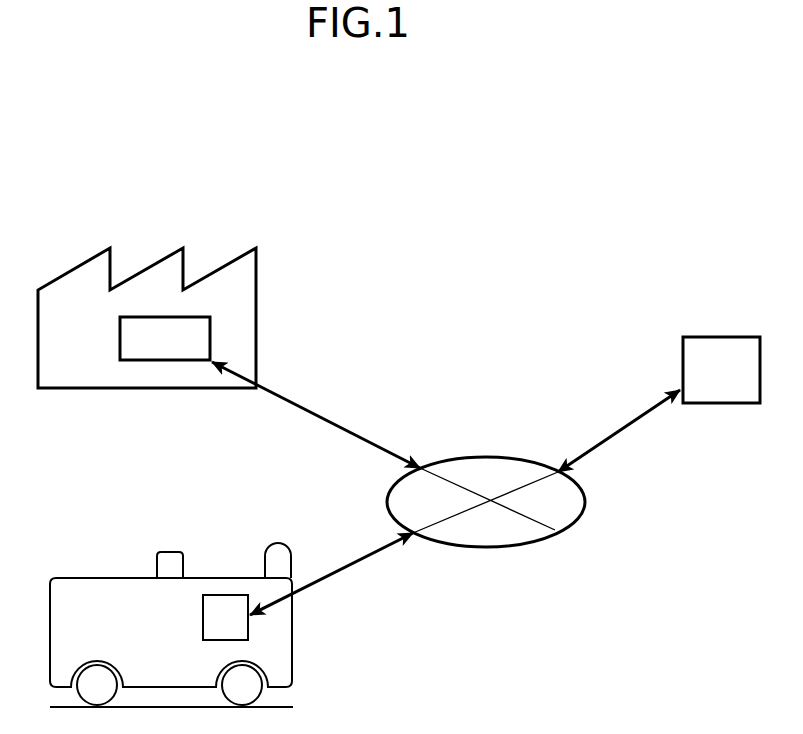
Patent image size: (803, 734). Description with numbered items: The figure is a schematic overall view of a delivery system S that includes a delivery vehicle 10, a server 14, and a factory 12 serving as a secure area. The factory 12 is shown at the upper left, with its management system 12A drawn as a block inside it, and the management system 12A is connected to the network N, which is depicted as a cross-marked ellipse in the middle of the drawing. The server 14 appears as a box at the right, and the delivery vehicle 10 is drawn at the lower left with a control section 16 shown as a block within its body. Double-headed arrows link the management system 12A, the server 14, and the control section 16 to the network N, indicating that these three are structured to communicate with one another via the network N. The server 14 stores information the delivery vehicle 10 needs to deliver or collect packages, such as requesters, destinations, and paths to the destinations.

The delivery system S is at (438, 202).
The delivery vehicle 10 is at (98, 577).
The factory 12 is at (210, 272).
The management system 12A is at (148, 317).
The server 14 is at (703, 336).
The control section 16 is at (230, 595).
The network N is at (483, 457).